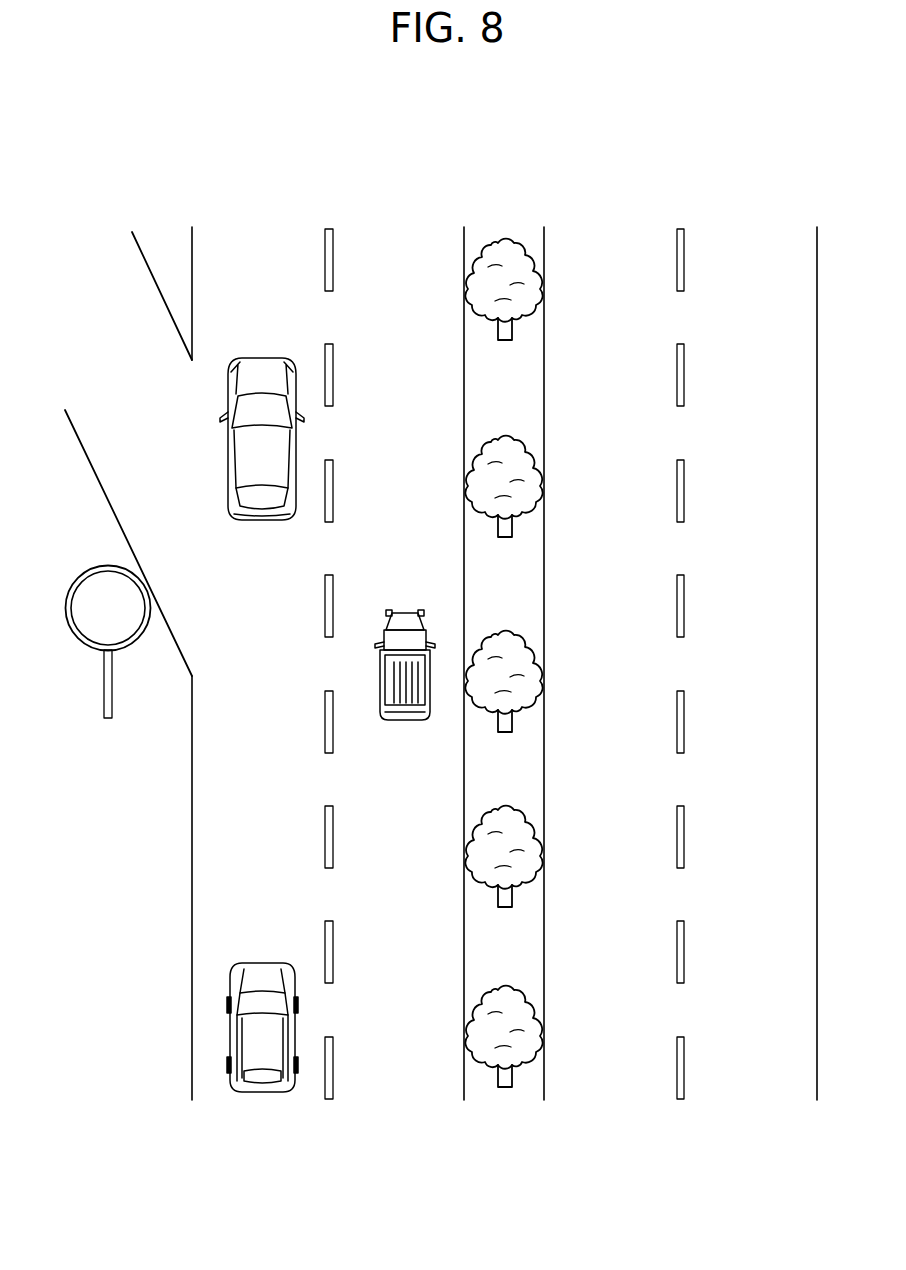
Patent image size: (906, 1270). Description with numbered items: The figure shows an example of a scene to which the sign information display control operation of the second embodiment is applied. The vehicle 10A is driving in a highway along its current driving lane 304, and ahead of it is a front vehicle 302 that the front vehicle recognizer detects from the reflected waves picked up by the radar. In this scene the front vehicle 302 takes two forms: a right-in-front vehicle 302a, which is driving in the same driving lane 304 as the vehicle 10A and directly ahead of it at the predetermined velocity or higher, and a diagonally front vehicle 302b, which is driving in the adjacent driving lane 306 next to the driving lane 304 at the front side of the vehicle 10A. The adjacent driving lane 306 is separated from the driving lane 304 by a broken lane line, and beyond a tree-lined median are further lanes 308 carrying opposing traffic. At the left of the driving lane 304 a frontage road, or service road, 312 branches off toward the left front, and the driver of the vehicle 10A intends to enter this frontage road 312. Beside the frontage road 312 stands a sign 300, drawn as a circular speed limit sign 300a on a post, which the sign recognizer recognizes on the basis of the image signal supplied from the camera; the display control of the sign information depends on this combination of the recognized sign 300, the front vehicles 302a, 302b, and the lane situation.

The vehicle 10A is at (262, 968).
The sign 300 is at (99, 667).
The speed limit sign 300a is at (90, 635).
The front vehicle 302 is at (264, 539).
The right-in-front vehicle 302a is at (237, 390).
The diagonally front vehicle 302b is at (387, 678).
The driving lane 304 is at (250, 243).
The adjacent driving lane 306 is at (383, 243).
The opposite lanes 308 is at (611, 242).
The frontage road 312 is at (97, 448).